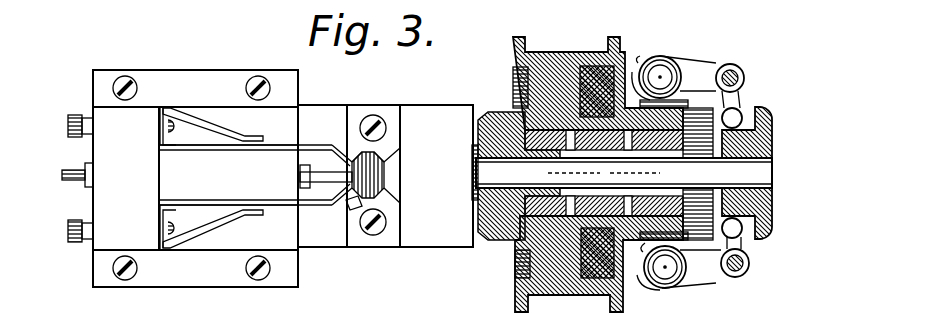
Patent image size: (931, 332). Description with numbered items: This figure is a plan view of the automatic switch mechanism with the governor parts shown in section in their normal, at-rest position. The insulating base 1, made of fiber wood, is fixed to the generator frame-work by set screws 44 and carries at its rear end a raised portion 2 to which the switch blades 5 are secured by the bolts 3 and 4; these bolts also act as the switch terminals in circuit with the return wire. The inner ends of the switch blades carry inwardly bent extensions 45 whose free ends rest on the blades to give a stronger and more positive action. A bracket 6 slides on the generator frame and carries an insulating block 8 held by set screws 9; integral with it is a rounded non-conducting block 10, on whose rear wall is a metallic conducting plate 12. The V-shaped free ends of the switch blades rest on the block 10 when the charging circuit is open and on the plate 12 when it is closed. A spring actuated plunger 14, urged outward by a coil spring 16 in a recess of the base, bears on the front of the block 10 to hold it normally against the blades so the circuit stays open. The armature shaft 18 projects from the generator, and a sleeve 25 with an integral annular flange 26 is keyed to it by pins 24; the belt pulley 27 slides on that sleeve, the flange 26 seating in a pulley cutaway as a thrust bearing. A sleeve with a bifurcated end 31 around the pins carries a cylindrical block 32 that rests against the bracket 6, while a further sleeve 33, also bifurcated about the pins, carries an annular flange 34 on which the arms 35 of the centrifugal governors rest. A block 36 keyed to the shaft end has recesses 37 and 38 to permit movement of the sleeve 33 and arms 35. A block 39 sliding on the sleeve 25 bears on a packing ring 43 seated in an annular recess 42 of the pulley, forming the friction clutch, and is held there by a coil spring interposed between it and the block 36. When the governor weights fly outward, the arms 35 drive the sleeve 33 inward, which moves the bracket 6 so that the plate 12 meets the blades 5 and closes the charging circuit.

The base 1 is at (183, 277).
The raised portion 2 is at (134, 178).
The bolt 3 is at (70, 118).
The bolt 4 is at (68, 229).
The switch blades 5 is at (210, 163).
The bracket 6 is at (440, 210).
The insulating block 8 is at (368, 247).
The set screws 9 is at (386, 129).
The block 10 is at (346, 206).
The metallic conducting plate 12 is at (392, 178).
The spring actuated plunger 14 is at (325, 170).
The coil spring 16 is at (64, 174).
The armature shaft 18 is at (760, 172).
The pins 24 is at (622, 158).
The sleeve 25 is at (505, 242).
The annular flange 26 is at (513, 97).
The belt pulley 27 is at (566, 284).
The bifurcated end 31 is at (604, 173).
The cylindrical block 32 is at (492, 112).
The sleeve 33 is at (690, 156).
The annular flange 34 is at (750, 262).
The arms 35 is at (742, 110).
The block 36 is at (772, 203).
The recess 37 is at (716, 272).
The recess 38 is at (772, 119).
The block 39 is at (646, 284).
The annular recess 42 is at (590, 66).
The packing ring 43 is at (644, 60).
The set screws 44 is at (245, 88).
The extensions 45 is at (212, 128).